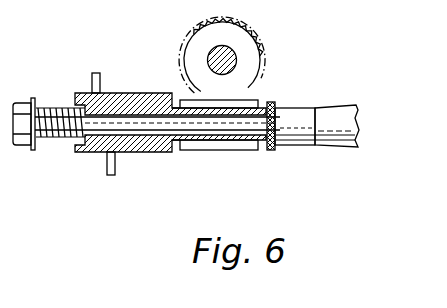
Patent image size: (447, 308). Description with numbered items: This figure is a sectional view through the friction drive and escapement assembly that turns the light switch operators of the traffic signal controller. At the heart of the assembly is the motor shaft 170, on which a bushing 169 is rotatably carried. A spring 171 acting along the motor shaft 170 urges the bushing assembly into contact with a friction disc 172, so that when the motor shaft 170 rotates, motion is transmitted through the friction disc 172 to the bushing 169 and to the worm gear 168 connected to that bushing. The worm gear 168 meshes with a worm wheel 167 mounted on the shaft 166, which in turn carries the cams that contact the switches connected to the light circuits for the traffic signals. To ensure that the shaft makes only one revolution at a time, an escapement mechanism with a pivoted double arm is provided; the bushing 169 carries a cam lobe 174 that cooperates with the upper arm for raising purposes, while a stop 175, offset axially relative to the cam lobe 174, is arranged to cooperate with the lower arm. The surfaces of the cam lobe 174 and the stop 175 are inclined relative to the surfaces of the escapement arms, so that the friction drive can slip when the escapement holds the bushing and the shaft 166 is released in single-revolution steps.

The shaft 166 is at (237, 62).
The worm wheel 167 is at (262, 56).
The worm gear 168 is at (263, 150).
The bushing 169 is at (160, 152).
The motor shaft 170 is at (92, 151).
The spring 171 is at (60, 103).
The friction disc 172 is at (277, 108).
The cam lobe 174 is at (101, 80).
The stop 175 is at (112, 176).